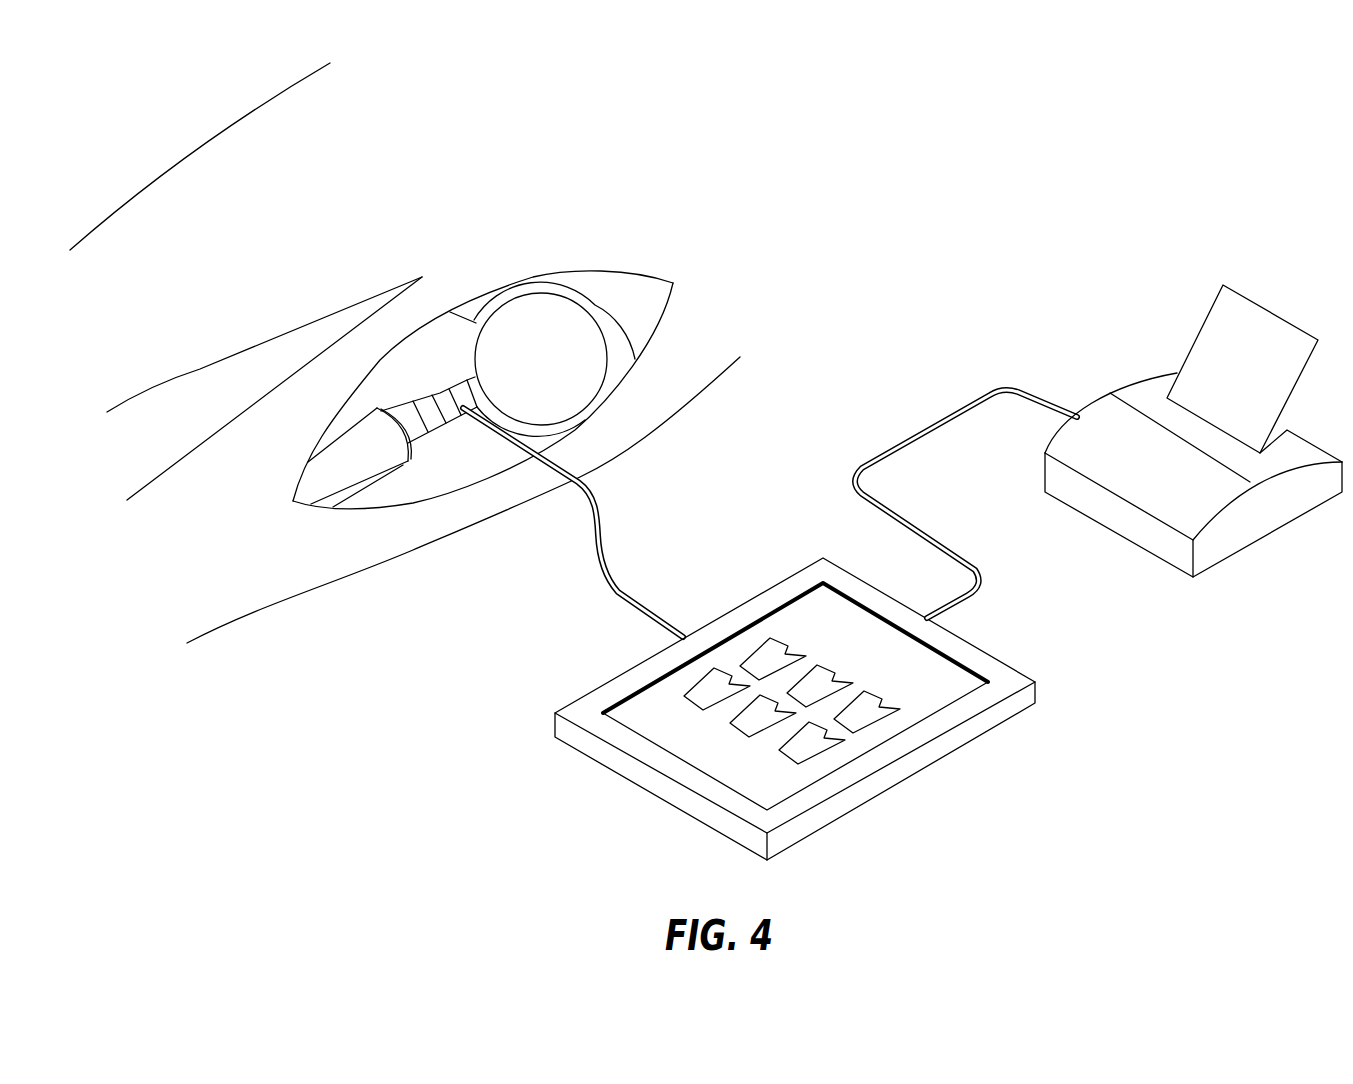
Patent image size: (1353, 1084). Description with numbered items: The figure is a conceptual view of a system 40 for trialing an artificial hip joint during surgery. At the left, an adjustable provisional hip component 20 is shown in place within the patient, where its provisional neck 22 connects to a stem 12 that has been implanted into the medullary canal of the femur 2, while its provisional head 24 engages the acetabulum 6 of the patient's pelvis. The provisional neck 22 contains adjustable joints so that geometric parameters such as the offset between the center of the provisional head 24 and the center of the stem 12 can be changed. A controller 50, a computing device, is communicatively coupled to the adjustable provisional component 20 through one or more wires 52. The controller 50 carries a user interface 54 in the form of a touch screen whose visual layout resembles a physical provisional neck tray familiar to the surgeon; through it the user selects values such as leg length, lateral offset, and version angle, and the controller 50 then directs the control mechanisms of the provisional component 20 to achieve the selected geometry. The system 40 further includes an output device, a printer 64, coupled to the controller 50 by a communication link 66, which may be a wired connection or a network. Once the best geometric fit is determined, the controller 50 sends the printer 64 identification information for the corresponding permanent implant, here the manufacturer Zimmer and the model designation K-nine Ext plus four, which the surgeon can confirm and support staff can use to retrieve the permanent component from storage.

The femur 2 is at (457, 424).
The acetabulum 6 is at (588, 296).
The stem 12 is at (353, 474).
The adjustable provisional hip component 20 is at (493, 297).
The provisional neck 22 is at (427, 391).
The provisional head 24 is at (550, 373).
The system 40 is at (706, 461).
The controller 50 is at (795, 709).
The wires 52 is at (603, 535).
The user interface 54 is at (955, 678).
The printer 64 is at (1130, 382).
The communication link 66 is at (919, 428).